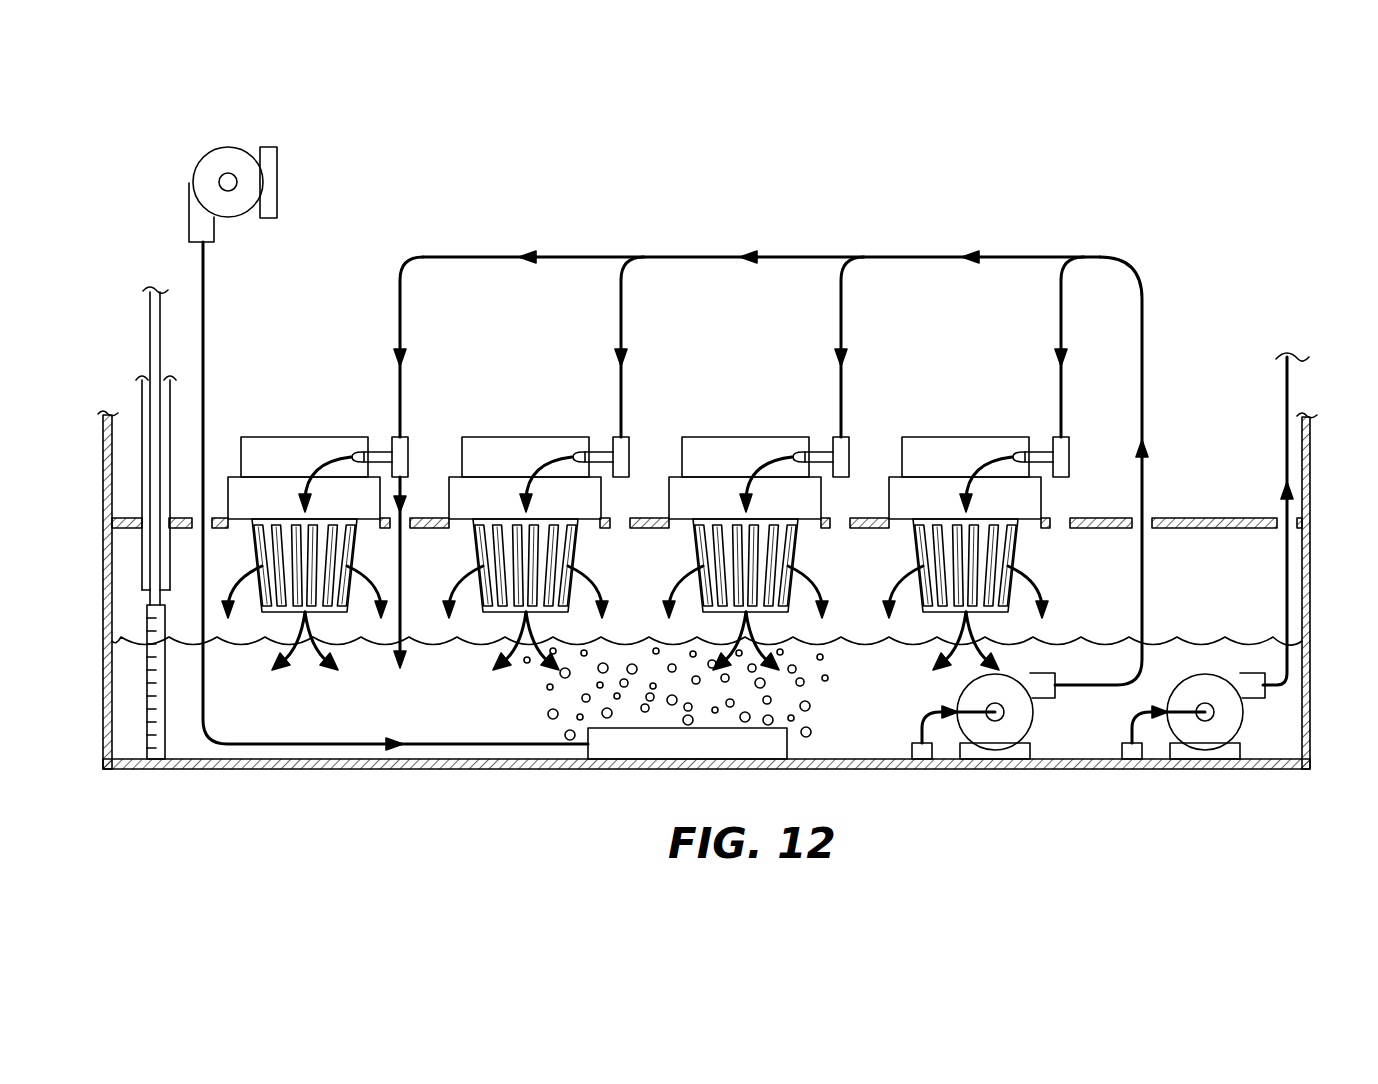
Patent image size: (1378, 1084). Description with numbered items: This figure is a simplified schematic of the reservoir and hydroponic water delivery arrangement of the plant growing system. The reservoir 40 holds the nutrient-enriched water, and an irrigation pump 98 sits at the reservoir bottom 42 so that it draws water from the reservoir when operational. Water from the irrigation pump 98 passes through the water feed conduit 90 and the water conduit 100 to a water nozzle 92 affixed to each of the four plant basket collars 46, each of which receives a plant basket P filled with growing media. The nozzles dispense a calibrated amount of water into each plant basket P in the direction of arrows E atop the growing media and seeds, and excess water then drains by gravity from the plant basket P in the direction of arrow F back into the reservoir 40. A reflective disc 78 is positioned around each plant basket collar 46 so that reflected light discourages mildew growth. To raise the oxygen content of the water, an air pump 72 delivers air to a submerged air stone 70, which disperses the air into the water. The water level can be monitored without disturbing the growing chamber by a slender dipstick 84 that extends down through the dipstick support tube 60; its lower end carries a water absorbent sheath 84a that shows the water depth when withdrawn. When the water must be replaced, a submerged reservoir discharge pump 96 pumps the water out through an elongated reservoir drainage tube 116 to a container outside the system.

The reservoir 40 is at (707, 623).
The reservoir bottom 42 is at (1110, 770).
The plant basket collar 46 is at (898, 457).
The dipstick support tube 60 is at (142, 396).
The air stone 70 is at (637, 746).
The air pump 72 is at (233, 146).
The reflective disc 78 is at (657, 517).
The dipstick 84 is at (150, 345).
The water absorbent sheath 84a is at (147, 686).
The water feed conduit 90 is at (1145, 318).
The water nozzle 92 is at (1044, 450).
The reservoir discharge pump 96 is at (1245, 722).
The irrigation pump 98 is at (1035, 722).
The water conduit 100 is at (793, 256).
The reservoir drainage tube 116 is at (1290, 392).
The water dispensing direction arrows E is at (738, 460).
The plant basket P is at (1018, 543).
The water drain direction arrow F is at (1060, 611).